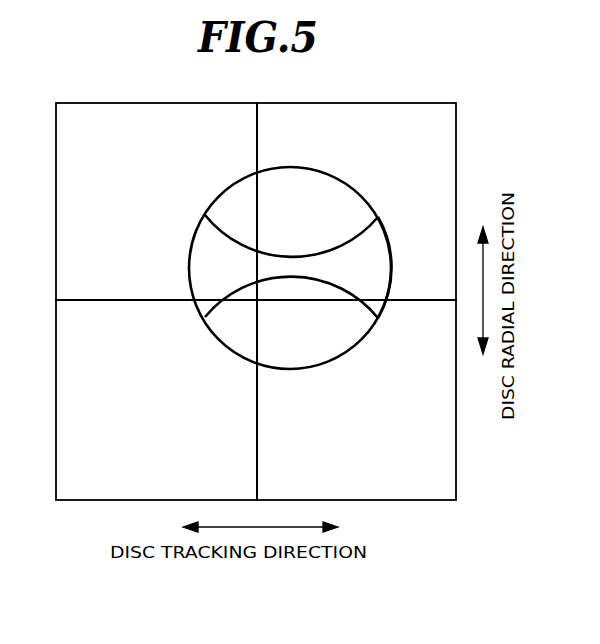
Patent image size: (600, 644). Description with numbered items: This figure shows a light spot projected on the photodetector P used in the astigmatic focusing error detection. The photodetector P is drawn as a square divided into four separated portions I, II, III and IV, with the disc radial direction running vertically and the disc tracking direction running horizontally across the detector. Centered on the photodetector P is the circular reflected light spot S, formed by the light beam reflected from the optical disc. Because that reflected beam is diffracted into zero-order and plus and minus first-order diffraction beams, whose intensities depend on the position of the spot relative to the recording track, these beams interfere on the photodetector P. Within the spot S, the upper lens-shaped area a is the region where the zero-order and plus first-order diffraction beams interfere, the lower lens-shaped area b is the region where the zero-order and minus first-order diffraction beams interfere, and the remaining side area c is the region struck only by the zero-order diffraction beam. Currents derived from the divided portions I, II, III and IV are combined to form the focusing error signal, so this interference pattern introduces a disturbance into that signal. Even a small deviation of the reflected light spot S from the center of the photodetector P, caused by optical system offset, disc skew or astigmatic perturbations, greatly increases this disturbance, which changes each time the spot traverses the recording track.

The photodetector P is at (256, 325).
The reflected light spot S is at (192, 258).
The interference area of 0-order and + first-order diffraction beams a is at (353, 203).
The interference area of 0-order and − first-order diffraction beams b is at (352, 338).
The area struck only by 0-order diffraction beam c is at (382, 256).
The first divided portion of photodetector I is at (356, 201).
The second divided portion of photodetector II is at (356, 400).
The third divided portion of photodetector III is at (156, 400).
The fourth divided portion of photodetector IV is at (156, 201).